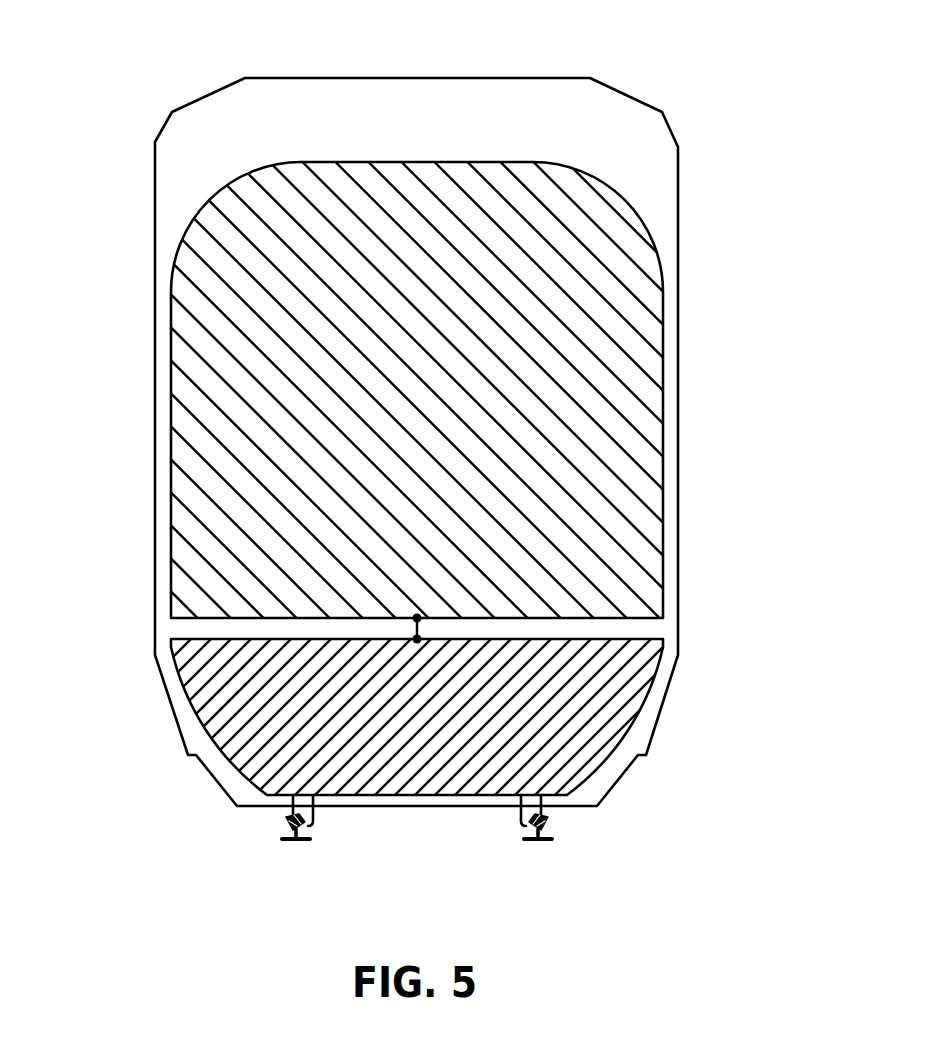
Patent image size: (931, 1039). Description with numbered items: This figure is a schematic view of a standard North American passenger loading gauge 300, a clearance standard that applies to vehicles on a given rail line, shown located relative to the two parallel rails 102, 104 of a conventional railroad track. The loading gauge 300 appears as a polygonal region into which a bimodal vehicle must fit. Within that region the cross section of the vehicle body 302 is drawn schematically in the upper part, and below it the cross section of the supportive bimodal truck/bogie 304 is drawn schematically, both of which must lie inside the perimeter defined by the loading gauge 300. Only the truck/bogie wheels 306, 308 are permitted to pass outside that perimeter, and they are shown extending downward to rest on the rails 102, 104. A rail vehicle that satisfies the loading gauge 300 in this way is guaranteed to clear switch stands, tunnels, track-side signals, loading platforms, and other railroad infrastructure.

The loading gauge 300 is at (678, 147).
The vehicle body cross section 302 is at (203, 205).
The bimodal truck/bogie cross section 304 is at (177, 687).
The truck/bogie wheel 306 is at (293, 817).
The truck/bogie wheel 308 is at (540, 812).
The rail 102 is at (290, 825).
The rail 104 is at (545, 830).